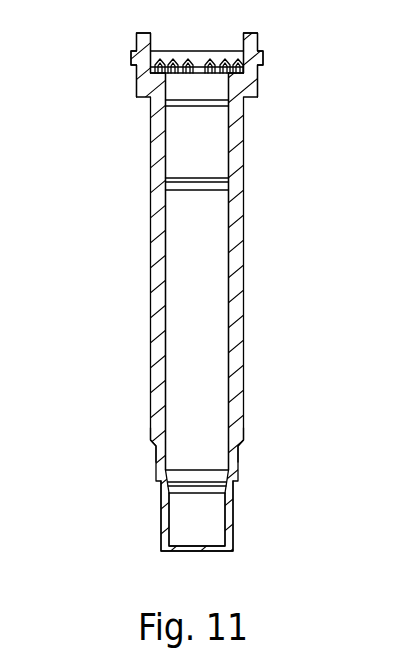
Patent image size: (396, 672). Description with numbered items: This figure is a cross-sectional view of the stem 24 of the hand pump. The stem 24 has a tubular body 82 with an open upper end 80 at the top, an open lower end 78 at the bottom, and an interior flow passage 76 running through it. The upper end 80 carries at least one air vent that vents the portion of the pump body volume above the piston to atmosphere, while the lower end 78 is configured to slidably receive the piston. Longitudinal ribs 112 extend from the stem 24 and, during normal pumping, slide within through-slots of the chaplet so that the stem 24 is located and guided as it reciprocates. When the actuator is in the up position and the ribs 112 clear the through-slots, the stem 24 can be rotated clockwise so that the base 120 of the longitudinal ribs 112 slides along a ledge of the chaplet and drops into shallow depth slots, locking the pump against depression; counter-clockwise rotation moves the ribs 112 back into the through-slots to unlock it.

The stem 24 is at (105, 258).
The open upper end 80 is at (259, 34).
The tubular body 82 is at (246, 277).
The longitudinal ribs 112 is at (246, 183).
The interior flow passage 76 is at (190, 392).
The base 120 is at (238, 443).
The open lower end 78 is at (234, 551).